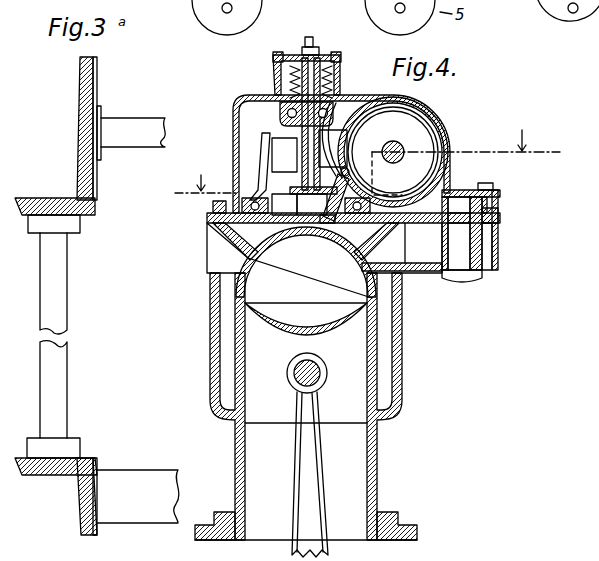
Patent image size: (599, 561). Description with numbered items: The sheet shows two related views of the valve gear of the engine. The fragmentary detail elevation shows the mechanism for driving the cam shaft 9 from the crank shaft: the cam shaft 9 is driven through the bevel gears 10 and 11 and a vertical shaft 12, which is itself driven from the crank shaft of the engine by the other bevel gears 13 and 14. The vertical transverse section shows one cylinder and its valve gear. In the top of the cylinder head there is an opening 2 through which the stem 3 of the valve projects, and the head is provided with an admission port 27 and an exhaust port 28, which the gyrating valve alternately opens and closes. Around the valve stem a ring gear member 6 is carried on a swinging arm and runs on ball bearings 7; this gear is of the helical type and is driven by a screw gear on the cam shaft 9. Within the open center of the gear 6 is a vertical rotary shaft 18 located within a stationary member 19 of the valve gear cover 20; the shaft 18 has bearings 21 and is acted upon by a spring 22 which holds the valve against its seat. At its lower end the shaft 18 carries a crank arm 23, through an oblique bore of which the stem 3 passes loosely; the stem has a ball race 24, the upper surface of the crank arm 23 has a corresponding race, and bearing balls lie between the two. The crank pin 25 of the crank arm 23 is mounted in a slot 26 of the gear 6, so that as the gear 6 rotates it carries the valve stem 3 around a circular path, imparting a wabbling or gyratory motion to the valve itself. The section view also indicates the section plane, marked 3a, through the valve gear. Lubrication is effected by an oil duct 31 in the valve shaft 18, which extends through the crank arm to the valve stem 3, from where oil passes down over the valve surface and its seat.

In FIG. 4, the opening 2 is at (279, 269).
In FIG. 4, the stem 3 is at (367, 154).
In FIG. 4, the crank pin end 3a is at (328, 224).
In FIG. 4, the ring gear member 6 is at (262, 185).
In FIG. 4, the ball bearings 7 is at (400, 162).
In FIG. 3A, the cam shaft 9 is at (136, 127).
In FIG. 3A, the bevel gear 10 is at (97, 173).
In FIG. 3A, the bevel gear 11 is at (52, 200).
In FIG. 3A, the vertical shaft 12 is at (56, 275).
In FIG. 3A, the bevel gear 13 is at (80, 455).
In FIG. 3A, the bevel gear 14 is at (80, 502).
In FIG. 4, the vertical rotary shaft 18 is at (334, 106).
In FIG. 4, the stationary member 19 is at (336, 134).
In FIG. 4, the valve gear cover 20 is at (450, 146).
In FIG. 4, the bearings 21 is at (284, 110).
In FIG. 4, the spring 22 is at (295, 90).
In FIG. 4, the crank arm 23 is at (364, 158).
In FIG. 4, the ball race 24 is at (387, 173).
In FIG. 4, the crank pin 25 is at (318, 208).
In FIG. 4, the slot 26 is at (302, 205).
In FIG. 4, the admission port 27 is at (408, 258).
In FIG. 4, the exhaust port 28 is at (263, 269).
In FIG. 4, the oil duct 31 is at (292, 118).